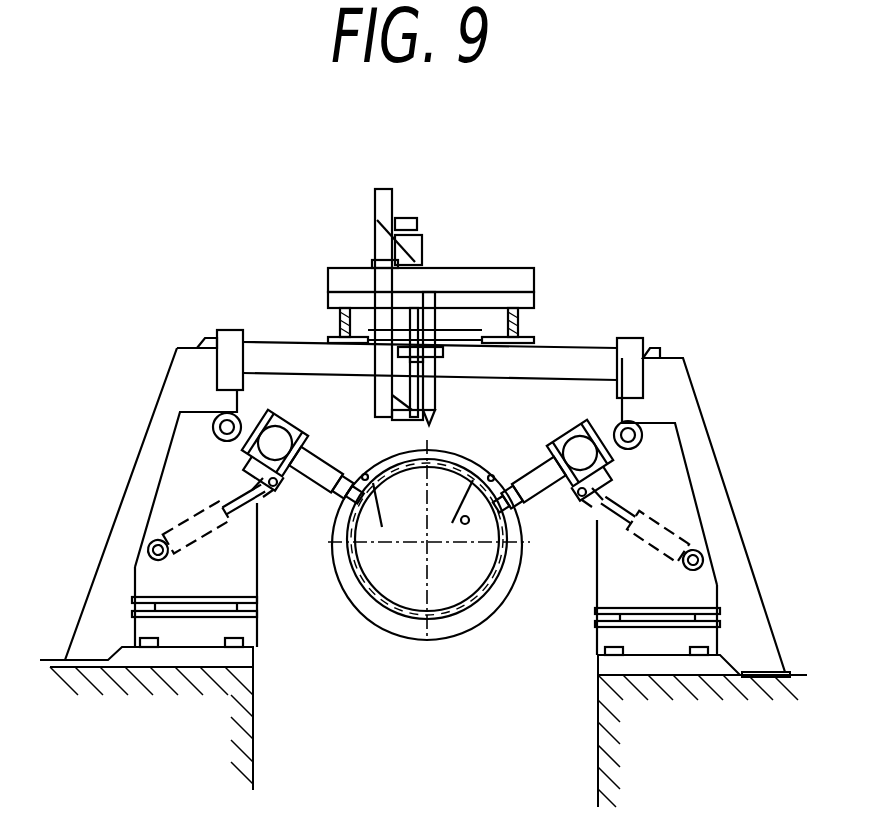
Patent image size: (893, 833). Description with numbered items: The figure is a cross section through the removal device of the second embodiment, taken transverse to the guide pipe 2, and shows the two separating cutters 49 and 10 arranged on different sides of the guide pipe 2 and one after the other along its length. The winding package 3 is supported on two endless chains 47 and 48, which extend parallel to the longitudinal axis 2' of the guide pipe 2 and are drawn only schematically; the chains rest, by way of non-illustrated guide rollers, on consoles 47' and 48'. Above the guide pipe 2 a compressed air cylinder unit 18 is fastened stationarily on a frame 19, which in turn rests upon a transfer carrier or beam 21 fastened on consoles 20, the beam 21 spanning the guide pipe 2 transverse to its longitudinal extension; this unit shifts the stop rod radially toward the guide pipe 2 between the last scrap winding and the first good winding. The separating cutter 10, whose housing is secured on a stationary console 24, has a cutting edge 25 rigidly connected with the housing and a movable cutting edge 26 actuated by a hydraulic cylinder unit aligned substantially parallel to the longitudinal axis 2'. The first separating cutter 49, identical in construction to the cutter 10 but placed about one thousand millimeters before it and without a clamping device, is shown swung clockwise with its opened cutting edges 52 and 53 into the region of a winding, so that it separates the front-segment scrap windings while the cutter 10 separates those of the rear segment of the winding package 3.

The guide pipe 2 is at (427, 589).
The longitudinal axis of the guide pipe 2' is at (429, 540).
The winding package 3 is at (470, 627).
The separating cutter 10 is at (296, 413).
The compressed air cylinder unit 18 is at (413, 250).
The frame 19 is at (498, 278).
The consoles 20 is at (150, 445).
The transfer carrier or beam 21 is at (573, 360).
The stationary console 24 is at (240, 573).
The knife or cutting edge 25 is at (328, 503).
The movable knife or cutting edge 26 is at (340, 478).
The endless chain 47 is at (392, 492).
The console 47' is at (389, 524).
The endless chain 48 is at (463, 492).
The console 48' is at (461, 514).
The first separating cutter or shears 49 is at (570, 418).
The cutting edge 52 is at (525, 505).
The cutting edge 53 is at (507, 478).